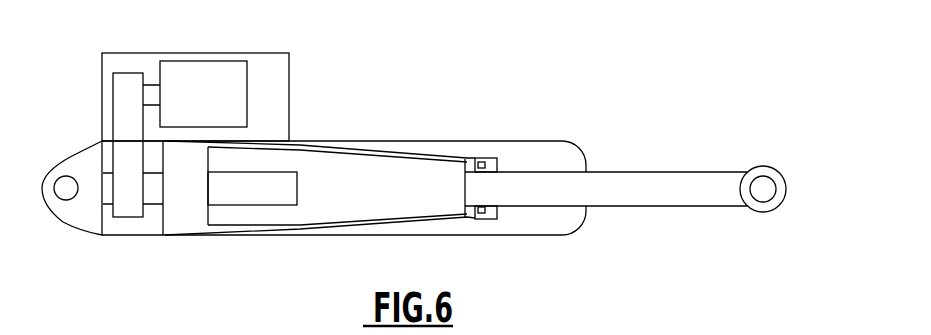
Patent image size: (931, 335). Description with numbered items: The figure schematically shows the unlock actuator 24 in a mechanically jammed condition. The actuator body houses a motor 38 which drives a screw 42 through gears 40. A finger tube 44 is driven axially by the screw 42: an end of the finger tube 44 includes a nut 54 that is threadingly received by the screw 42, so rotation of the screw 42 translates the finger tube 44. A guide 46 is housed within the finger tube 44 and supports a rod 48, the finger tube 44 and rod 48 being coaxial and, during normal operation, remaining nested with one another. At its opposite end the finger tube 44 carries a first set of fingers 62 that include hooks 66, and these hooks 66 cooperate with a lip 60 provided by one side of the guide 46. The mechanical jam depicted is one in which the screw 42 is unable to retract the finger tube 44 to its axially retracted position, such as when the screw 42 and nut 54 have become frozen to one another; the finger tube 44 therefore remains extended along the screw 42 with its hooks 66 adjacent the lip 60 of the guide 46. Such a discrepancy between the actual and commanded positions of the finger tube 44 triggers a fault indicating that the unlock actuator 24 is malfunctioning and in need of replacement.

The unlock actuator 24 is at (476, 91).
The motor 38 is at (216, 74).
The gears 40 is at (123, 94).
The screw 42 is at (310, 180).
The finger tube 44 is at (340, 145).
The guide 46 is at (470, 188).
The rod 48 is at (653, 185).
The nut 54 is at (186, 223).
The lip 60 is at (482, 160).
The first set of fingers 62 is at (408, 225).
The hooks 66 is at (483, 207).